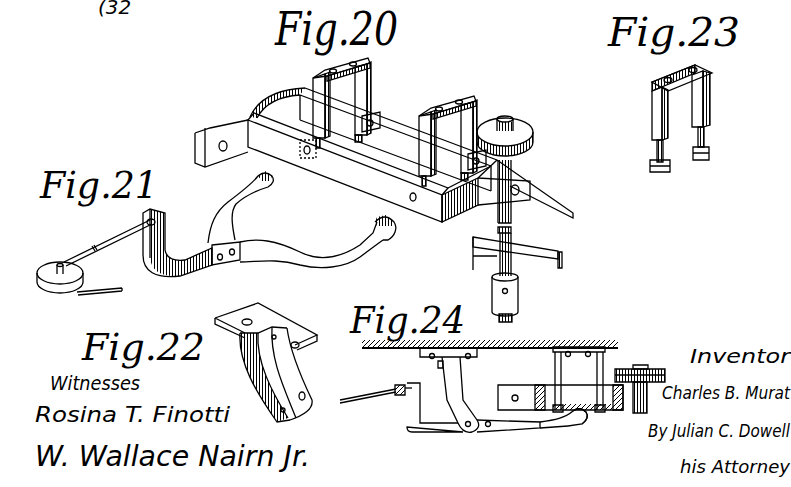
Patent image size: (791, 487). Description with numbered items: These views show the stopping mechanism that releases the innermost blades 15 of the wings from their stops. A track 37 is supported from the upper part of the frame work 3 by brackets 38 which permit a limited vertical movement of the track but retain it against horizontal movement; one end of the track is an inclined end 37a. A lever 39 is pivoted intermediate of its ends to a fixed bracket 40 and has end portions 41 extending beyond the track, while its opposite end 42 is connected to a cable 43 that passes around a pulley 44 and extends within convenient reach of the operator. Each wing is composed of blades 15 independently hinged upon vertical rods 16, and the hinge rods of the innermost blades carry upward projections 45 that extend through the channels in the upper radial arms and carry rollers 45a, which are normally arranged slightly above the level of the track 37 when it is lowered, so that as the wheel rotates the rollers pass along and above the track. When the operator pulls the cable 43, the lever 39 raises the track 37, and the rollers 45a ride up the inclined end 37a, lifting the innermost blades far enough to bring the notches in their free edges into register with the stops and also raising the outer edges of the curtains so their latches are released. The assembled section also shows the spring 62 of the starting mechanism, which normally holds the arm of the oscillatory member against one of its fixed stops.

In FIG. 24, the frame work 3 is at (547, 342).
In FIG. 20, the blades 15 is at (553, 263).
In FIG. 20, the vertical rods 16 is at (500, 256).
In FIG. 20, the track 37 is at (396, 118).
In FIG. 24, the track 37 is at (617, 414).
In FIG. 20, the inclined end of the track 37a is at (556, 198).
In FIG. 20, the brackets 38 is at (314, 86).
In FIG. 23, the brackets 38 is at (710, 103).
In FIG. 24, the brackets 38 is at (617, 352).
In FIG. 21, the lever 39 is at (247, 247).
In FIG. 24, the lever 39 is at (497, 423).
In FIG. 22, the fixed bracket 40 is at (266, 365).
In FIG. 24, the fixed bracket 40 is at (455, 388).
In FIG. 21, the end portions of the lever 41 is at (373, 225).
In FIG. 24, the end portions of the lever 41 is at (570, 426).
In FIG. 21, the opposite end of the lever 42 is at (163, 211).
In FIG. 21, the cable 43 is at (102, 247).
In FIG. 24, the cable 43 is at (376, 405).
In FIG. 21, the pulley 44 is at (48, 292).
In FIG. 20, the upward projections 45 is at (512, 212).
In FIG. 24, the upward projections 45 is at (645, 409).
In FIG. 20, the rollers 45a is at (526, 129).
In FIG. 24, the rollers 45a is at (664, 369).
In FIG. 24, the spring 62 is at (438, 365).